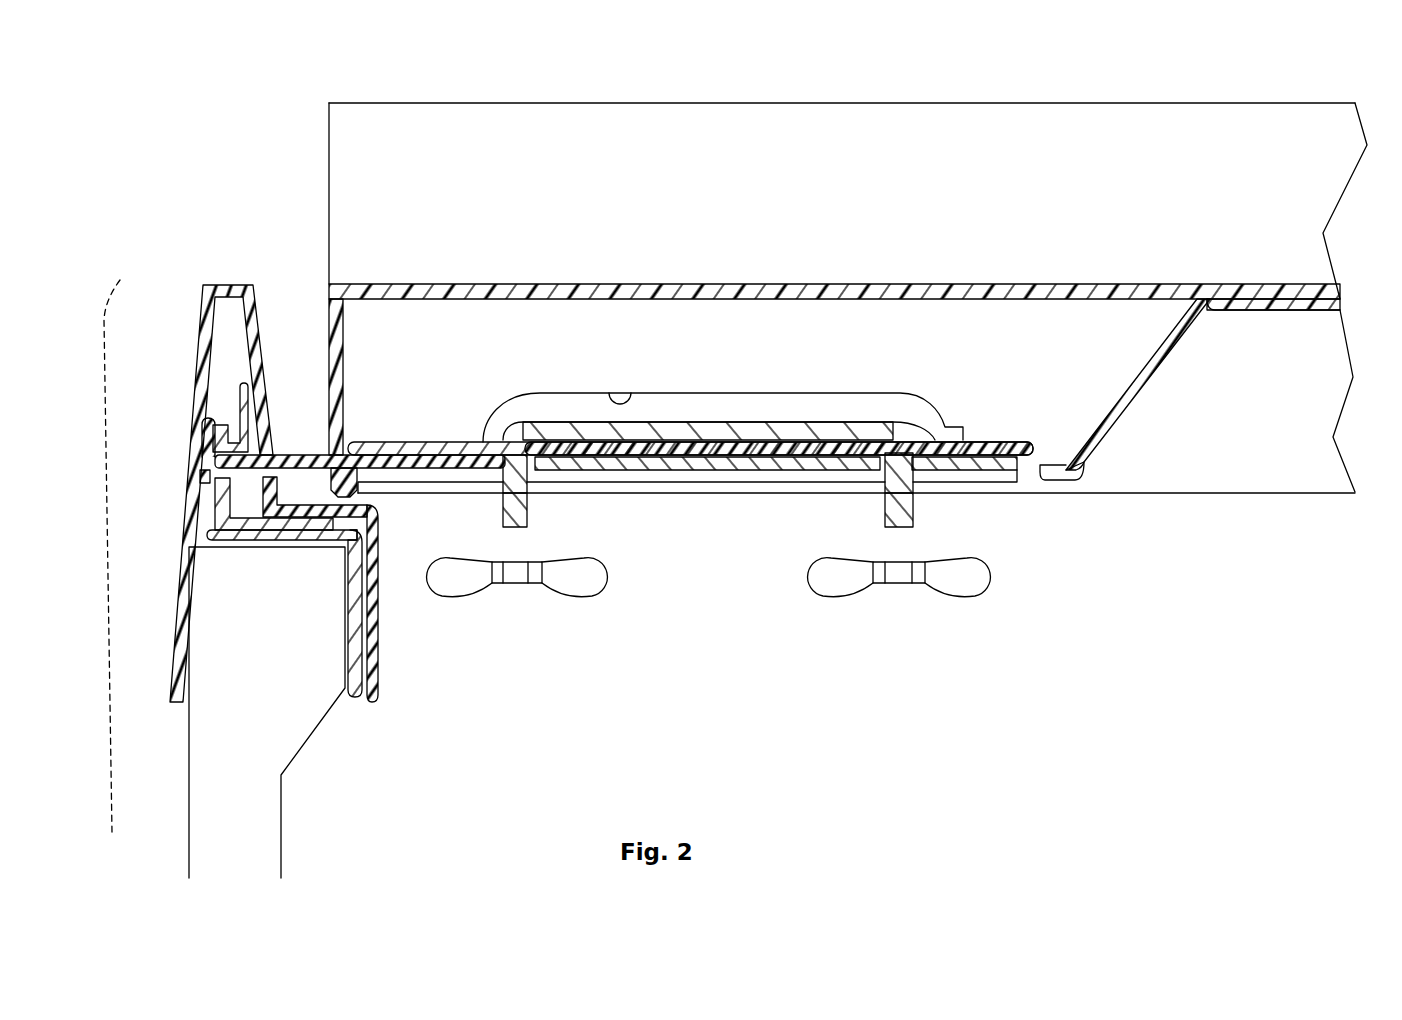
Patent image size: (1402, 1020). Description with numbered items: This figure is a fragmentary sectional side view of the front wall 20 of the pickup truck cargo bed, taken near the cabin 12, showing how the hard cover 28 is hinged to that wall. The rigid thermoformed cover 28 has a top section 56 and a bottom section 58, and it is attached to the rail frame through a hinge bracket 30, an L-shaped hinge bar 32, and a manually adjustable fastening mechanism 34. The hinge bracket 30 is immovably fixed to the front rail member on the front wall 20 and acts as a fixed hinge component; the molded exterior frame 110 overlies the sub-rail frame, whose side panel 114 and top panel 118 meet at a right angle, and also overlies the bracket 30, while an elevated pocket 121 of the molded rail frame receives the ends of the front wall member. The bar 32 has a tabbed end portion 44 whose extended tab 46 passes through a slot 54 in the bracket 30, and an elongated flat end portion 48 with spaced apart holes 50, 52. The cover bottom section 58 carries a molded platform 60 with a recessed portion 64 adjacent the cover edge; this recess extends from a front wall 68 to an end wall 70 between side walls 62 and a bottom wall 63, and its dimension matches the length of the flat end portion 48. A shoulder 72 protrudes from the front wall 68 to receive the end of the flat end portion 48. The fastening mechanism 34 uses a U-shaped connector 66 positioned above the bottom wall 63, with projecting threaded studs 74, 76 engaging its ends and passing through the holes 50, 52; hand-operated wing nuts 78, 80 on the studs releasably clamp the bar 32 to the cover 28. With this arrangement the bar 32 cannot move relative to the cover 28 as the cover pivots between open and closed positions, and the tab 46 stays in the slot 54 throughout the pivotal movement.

The cabin 12 is at (121, 540).
The front wall 20 is at (302, 747).
The cover 28 is at (1343, 195).
The hinge bracket 30 is at (218, 512).
The hinge bar 32 is at (310, 462).
The fastening mechanism 34 is at (723, 386).
The tabbed end portion 44 is at (222, 465).
The tab 46 is at (208, 437).
The flat end portion 48 is at (707, 468).
The hole 50 is at (915, 480).
The hole 52 is at (493, 468).
The slot 54 is at (243, 392).
The top section 56 is at (542, 107).
The bottom section 58 is at (1117, 485).
The molded platform 60 is at (1190, 389).
The side walls 62 is at (1026, 338).
The bottom wall 63 is at (392, 443).
The recessed portion 64 is at (621, 390).
The U-shaped connector 66 is at (797, 426).
The front wall 68 is at (1173, 337).
The end wall 70 is at (343, 335).
The shoulder 72 is at (1030, 447).
The stud 74 is at (893, 519).
The stud 76 is at (528, 520).
The wing nut 78 is at (977, 580).
The wing nut 80 is at (597, 590).
The exterior frame 110 is at (380, 670).
The side panel 114 is at (353, 657).
The top panel 118 is at (277, 540).
The elevated pocket 121 is at (215, 290).